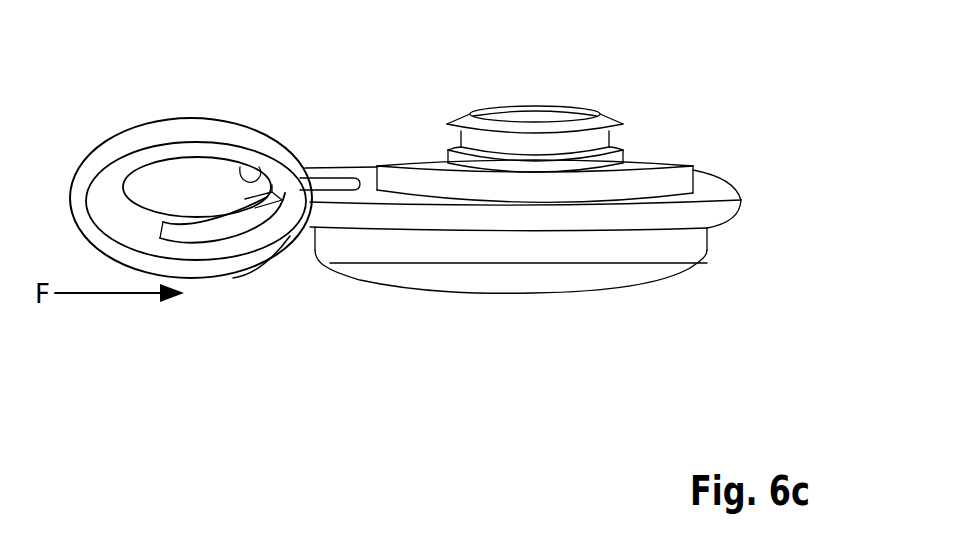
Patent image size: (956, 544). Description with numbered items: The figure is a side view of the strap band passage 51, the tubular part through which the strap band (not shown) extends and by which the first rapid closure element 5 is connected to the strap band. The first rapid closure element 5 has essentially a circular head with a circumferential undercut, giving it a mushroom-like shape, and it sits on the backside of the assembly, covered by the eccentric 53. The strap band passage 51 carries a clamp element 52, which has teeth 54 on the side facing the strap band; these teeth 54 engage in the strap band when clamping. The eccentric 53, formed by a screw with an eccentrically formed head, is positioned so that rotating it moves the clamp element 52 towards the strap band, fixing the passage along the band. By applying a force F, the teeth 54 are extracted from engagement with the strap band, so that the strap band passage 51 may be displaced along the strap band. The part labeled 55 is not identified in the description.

The first rapid closure element 5 is at (583, 100).
The strap band passage 51 is at (148, 240).
The clamp element 52 is at (222, 272).
The eccentric 53 is at (493, 257).
The teeth 54 is at (276, 196).
The disc flange 55 is at (707, 212).